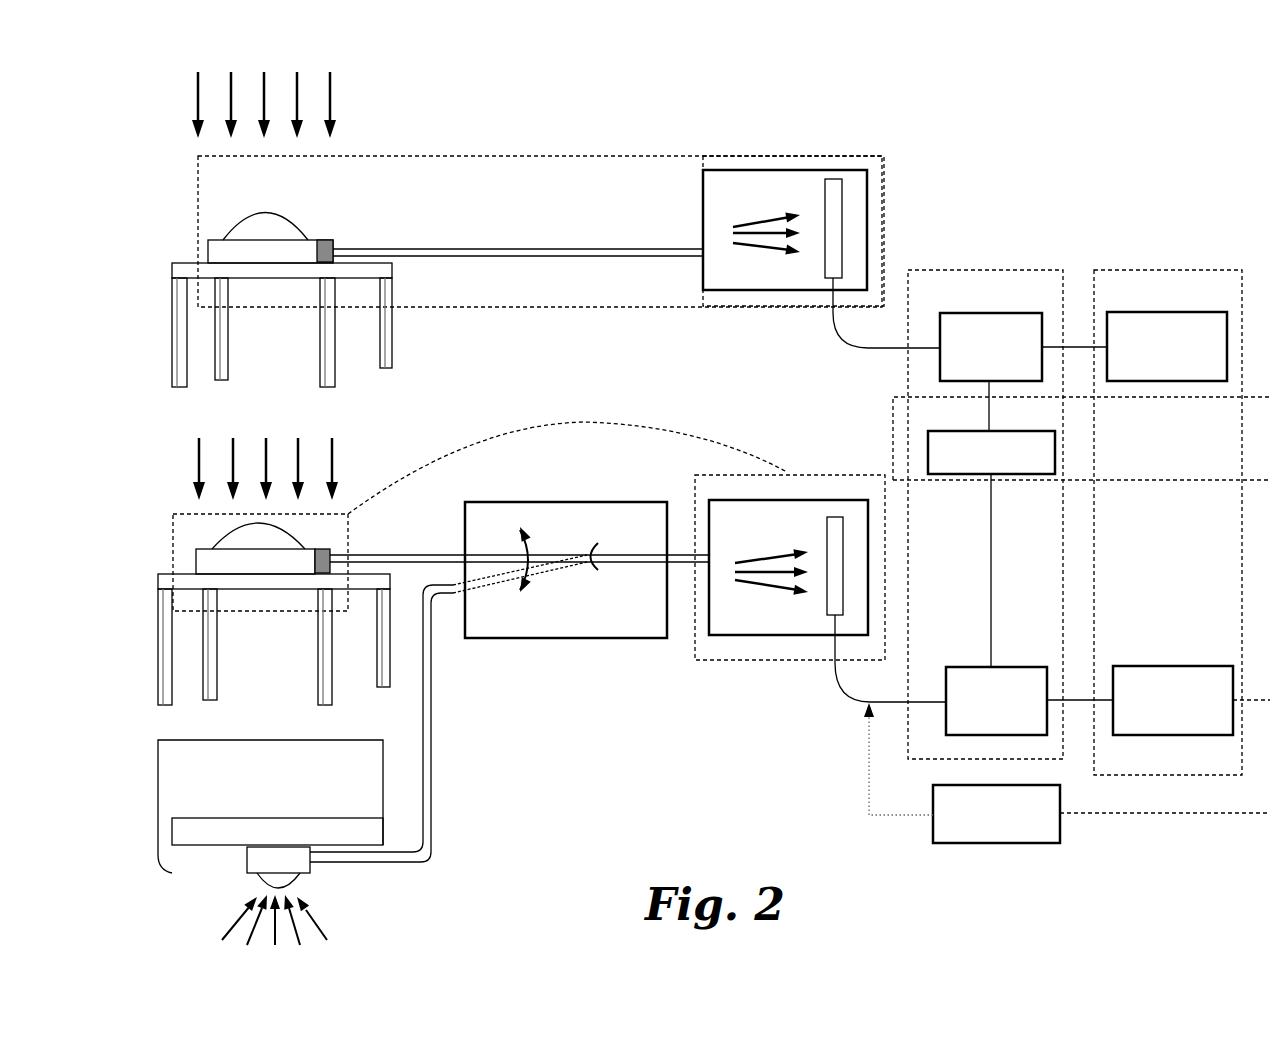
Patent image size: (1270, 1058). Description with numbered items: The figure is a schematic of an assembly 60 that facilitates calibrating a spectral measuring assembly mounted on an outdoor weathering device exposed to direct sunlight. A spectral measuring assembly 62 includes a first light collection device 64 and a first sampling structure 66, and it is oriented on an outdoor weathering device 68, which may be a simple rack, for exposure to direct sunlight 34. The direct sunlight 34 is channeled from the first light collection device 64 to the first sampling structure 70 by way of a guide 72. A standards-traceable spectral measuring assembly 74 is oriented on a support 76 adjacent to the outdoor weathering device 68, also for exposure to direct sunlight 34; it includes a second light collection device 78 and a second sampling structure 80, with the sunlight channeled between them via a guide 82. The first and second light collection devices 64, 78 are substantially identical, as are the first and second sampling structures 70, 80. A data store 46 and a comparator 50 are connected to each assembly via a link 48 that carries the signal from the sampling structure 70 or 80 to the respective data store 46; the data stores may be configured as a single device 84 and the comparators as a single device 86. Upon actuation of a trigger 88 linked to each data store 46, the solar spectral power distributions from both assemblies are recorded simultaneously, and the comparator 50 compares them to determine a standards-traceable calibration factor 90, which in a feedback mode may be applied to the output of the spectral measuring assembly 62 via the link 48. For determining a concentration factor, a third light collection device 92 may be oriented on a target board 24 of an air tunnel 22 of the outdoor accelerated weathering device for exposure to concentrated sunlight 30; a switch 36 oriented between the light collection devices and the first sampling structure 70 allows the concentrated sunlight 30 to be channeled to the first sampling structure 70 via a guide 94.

The air tunnel 22 is at (160, 800).
The target board 24 is at (302, 818).
The concentrated sunlight 30 is at (327, 930).
The direct sunlight 34 is at (331, 95).
The switch 36 is at (625, 500).
The data store 46 is at (990, 312).
The link 48 is at (848, 345).
The comparator 50 is at (1125, 312).
The assembly 60 is at (672, 124).
The spectral measuring assembly 62 is at (660, 410).
The first light collection device 64 is at (318, 548).
The first sampling structure 66 is at (900, 186).
The outdoor weathering device 68 is at (320, 665).
The first sampling structure 70 is at (835, 517).
The guide 72 is at (792, 168).
The standards-traceable spectral measuring assembly 74 is at (543, 155).
The support 76 is at (390, 360).
The second light collection device 78 is at (324, 240).
The second sampling structure 80 is at (835, 178).
The guide 82 is at (482, 248).
The single device 84 is at (1023, 270).
The single device 86 is at (1166, 270).
The trigger 88 is at (1020, 475).
The standards-traceable calibration factor 90 is at (997, 843).
The third light collection device 92 is at (313, 868).
The guide 94 is at (433, 765).